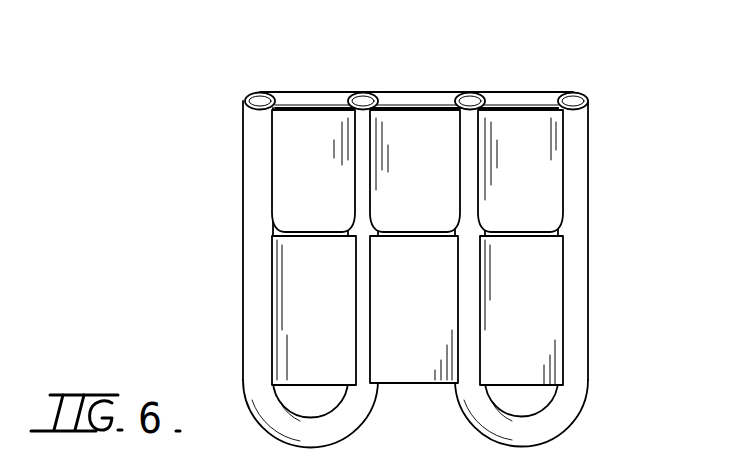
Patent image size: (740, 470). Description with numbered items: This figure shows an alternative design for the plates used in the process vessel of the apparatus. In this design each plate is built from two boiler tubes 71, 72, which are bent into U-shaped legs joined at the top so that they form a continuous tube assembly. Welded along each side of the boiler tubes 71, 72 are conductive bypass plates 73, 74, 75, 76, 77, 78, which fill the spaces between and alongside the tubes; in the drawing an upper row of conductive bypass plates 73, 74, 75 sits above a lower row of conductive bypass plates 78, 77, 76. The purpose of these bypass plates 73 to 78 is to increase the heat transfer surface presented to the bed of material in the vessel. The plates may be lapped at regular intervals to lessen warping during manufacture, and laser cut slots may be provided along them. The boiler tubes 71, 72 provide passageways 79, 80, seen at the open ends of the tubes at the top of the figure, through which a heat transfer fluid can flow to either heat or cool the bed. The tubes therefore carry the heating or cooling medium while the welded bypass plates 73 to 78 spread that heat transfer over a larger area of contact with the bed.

The boiler tube 71 is at (262, 276).
The boiler tube 72 is at (576, 284).
The conductive bypass plate 73 is at (307, 178).
The conductive bypass plate 74 is at (421, 178).
The conductive bypass plate 75 is at (540, 178).
The conductive bypass plate 76 is at (538, 342).
The conductive bypass plate 77 is at (424, 342).
The conductive bypass plate 78 is at (328, 342).
The passageway 79 is at (358, 95).
The passageway 80 is at (570, 95).